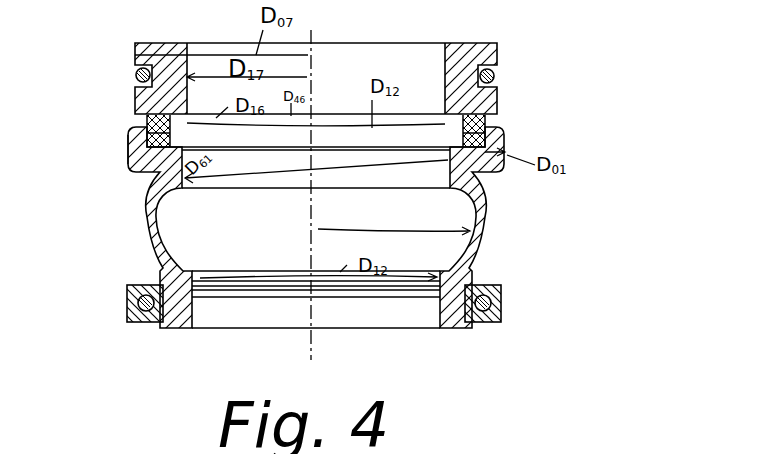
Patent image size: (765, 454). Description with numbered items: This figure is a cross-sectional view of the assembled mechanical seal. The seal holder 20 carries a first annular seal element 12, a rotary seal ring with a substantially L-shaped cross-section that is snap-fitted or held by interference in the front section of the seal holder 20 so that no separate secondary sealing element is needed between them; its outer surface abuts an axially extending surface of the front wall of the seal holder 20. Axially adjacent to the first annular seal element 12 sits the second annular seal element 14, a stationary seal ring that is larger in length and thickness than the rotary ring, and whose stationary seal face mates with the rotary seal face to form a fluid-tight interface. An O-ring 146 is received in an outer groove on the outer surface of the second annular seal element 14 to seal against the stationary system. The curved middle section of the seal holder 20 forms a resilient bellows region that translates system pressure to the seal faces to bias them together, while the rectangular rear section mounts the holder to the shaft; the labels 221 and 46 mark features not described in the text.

The second annular seal element 14 is at (467, 42).
The O-ring 146 is at (498, 73).
The first annular seal element 12 is at (497, 121).
The seal holder 20 is at (490, 205).
The upper flange of body 221 is at (145, 121).
The lower retaining ring 46 is at (500, 289).